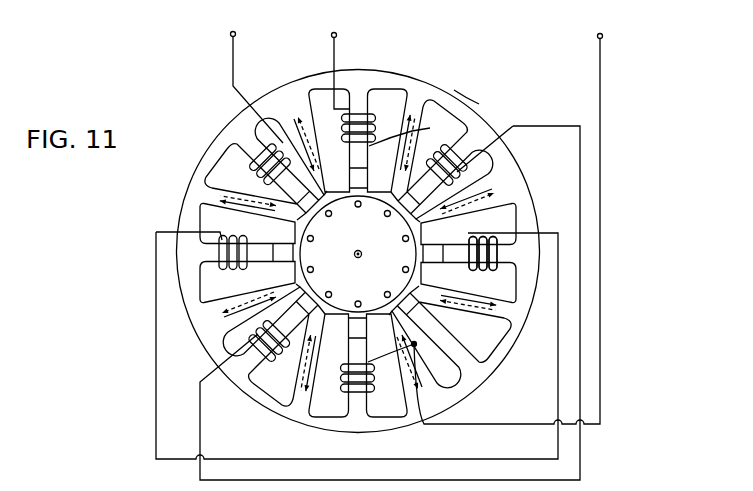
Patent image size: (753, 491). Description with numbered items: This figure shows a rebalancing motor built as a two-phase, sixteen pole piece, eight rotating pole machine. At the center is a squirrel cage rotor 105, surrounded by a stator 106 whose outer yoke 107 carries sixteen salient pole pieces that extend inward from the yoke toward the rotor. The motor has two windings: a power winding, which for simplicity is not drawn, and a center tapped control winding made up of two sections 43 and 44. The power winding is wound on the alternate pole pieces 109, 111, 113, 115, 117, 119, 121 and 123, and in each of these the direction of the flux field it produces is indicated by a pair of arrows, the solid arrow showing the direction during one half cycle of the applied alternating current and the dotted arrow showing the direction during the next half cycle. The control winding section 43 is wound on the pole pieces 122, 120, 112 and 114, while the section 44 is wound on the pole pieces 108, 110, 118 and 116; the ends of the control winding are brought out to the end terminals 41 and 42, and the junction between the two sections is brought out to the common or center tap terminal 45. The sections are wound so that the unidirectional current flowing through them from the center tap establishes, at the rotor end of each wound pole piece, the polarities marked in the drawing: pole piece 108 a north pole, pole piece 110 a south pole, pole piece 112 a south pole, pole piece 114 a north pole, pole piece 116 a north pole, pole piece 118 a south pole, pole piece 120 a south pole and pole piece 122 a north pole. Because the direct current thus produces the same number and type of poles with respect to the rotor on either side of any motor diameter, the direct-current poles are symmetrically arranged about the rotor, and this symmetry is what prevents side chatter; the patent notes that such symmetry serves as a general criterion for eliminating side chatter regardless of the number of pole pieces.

The end terminal 41 is at (233, 31).
The end terminal 42 is at (334, 32).
The control winding section 43 is at (258, 178).
The control winding section 44 is at (375, 132).
The center tap terminal 45 is at (600, 33).
The squirrel cage rotor 105 is at (373, 237).
The stator 106 is at (400, 73).
The yoke 107 is at (458, 109).
The pole piece 108 is at (357, 90).
The pole piece 109 is at (414, 106).
The pole piece 110 is at (470, 140).
The pole piece 111 is at (505, 196).
The pole piece 112 is at (514, 255).
The pole piece 113 is at (494, 308).
The pole piece 114 is at (481, 374).
The pole piece 115 is at (426, 426).
The pole piece 116 is at (355, 420).
The pole piece 117 is at (299, 405).
The pole piece 118 is at (262, 375).
The pole piece 119 is at (214, 322).
The pole piece 120 is at (199, 252).
The pole piece 121 is at (209, 195).
The pole piece 122 is at (249, 144).
The pole piece 123 is at (300, 104).